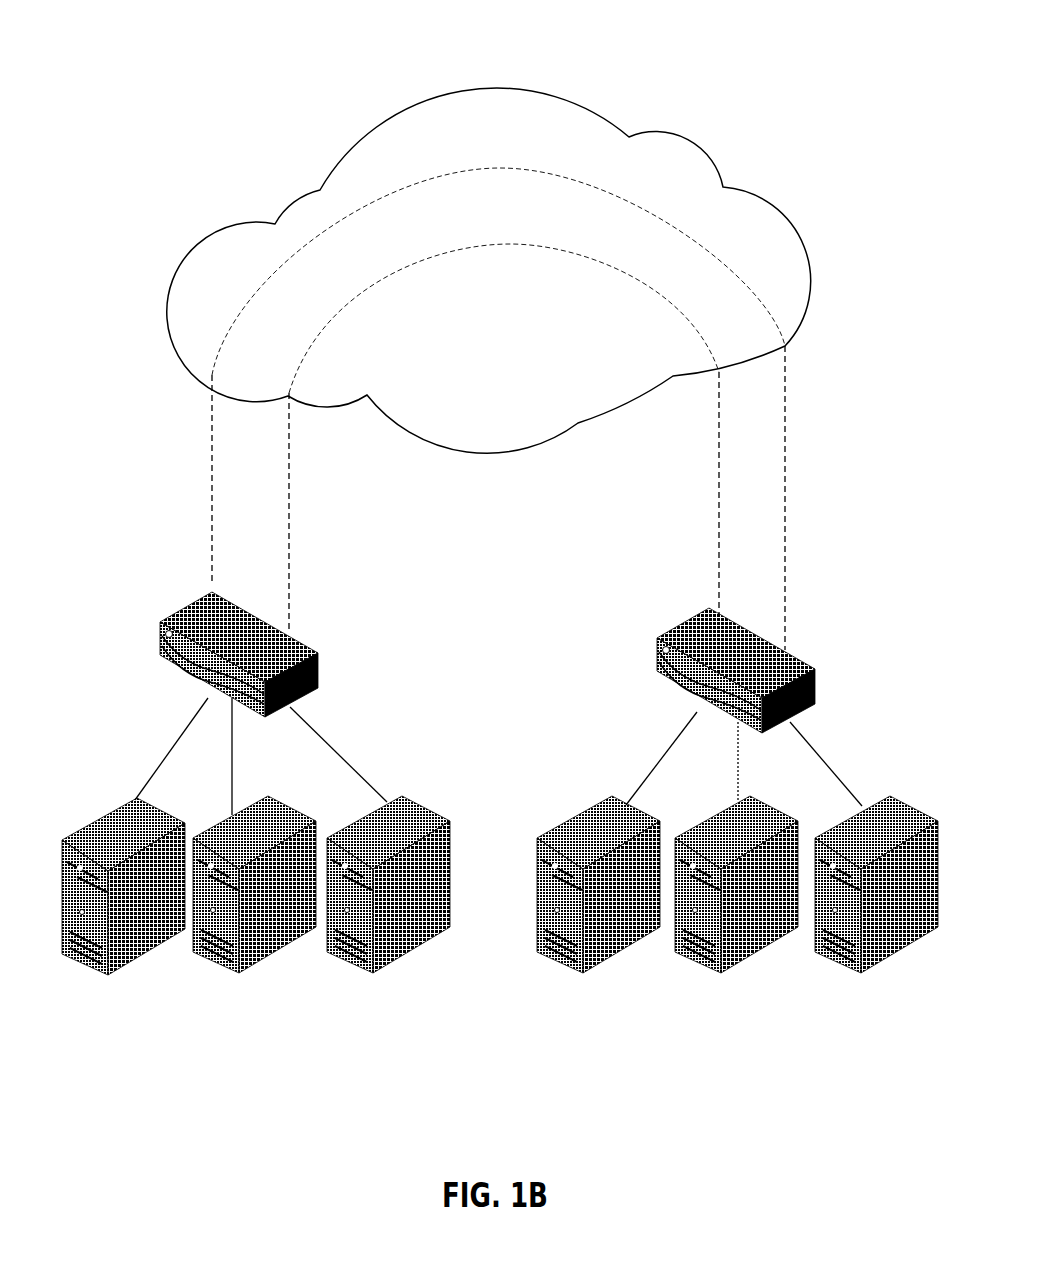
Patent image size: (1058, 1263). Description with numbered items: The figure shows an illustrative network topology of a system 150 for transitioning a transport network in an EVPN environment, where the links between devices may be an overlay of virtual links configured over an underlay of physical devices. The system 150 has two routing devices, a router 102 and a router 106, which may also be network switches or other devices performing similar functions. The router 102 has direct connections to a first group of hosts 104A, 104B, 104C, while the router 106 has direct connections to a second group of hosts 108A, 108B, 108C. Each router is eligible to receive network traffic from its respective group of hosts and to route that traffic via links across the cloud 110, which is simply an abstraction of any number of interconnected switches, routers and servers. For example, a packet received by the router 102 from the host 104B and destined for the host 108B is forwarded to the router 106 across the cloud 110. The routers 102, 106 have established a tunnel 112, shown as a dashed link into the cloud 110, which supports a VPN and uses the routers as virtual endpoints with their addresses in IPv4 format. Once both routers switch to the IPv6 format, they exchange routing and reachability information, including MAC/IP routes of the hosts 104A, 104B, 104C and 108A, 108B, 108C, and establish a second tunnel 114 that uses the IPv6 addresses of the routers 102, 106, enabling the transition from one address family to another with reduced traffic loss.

The system 150 is at (505, 34).
The cloud 110 is at (193, 247).
The tunnel 112 is at (212, 508).
The second tunnel 114 is at (290, 530).
The router 102 is at (158, 622).
The router 106 is at (818, 678).
The host 104A is at (80, 963).
The host 104B is at (203, 963).
The host 104C is at (337, 963).
The host 108A is at (550, 962).
The host 108B is at (690, 962).
The host 108C is at (830, 962).